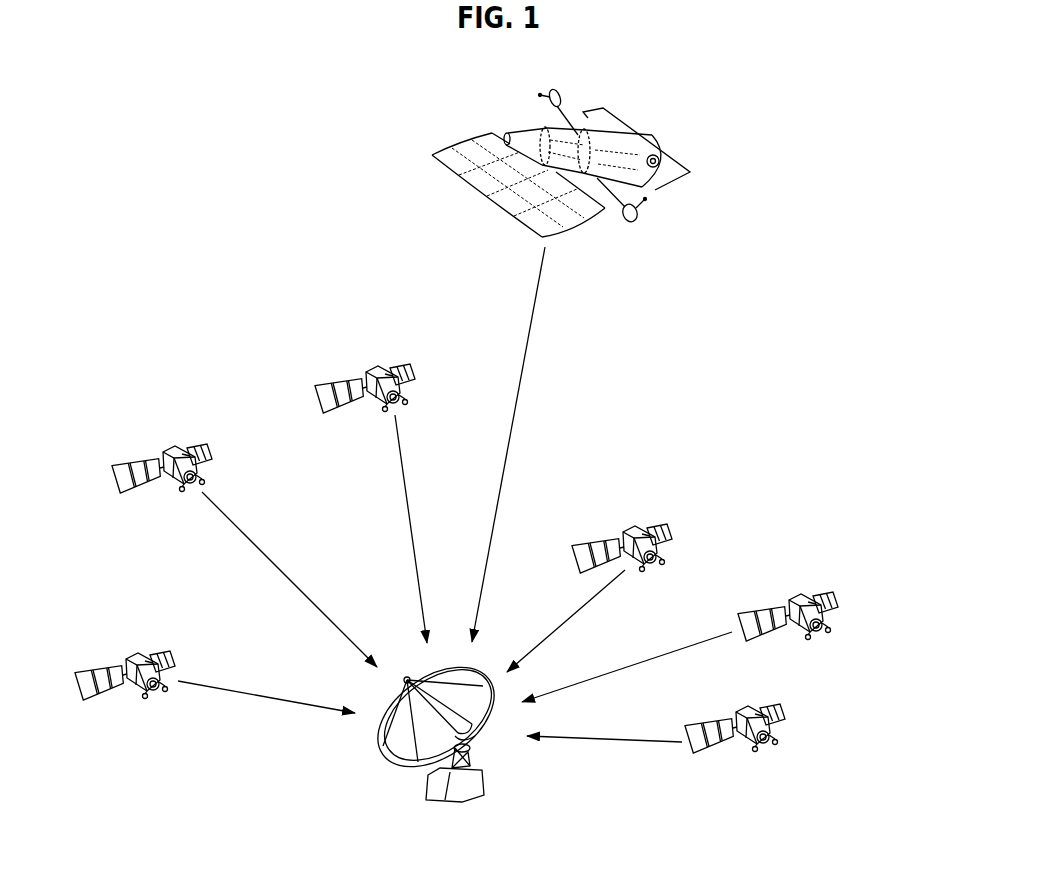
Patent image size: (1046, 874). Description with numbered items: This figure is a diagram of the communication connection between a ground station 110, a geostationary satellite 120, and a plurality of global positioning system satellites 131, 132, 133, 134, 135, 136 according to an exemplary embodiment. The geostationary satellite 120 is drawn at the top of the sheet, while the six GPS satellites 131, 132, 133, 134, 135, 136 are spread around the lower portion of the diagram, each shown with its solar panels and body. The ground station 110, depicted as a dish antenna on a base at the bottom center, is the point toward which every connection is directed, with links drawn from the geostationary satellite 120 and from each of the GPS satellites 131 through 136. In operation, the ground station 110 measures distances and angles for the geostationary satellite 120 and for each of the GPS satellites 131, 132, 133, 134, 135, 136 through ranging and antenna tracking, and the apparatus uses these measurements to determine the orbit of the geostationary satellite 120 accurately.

The ground station 110 is at (467, 802).
The geostationary satellite 120 is at (667, 143).
The GPS satellite 131 is at (125, 692).
The GPS satellite 132 is at (162, 487).
The GPS satellite 133 is at (835, 603).
The GPS satellite 134 is at (782, 715).
The GPS satellite 135 is at (670, 535).
The GPS satellite 136 is at (365, 407).